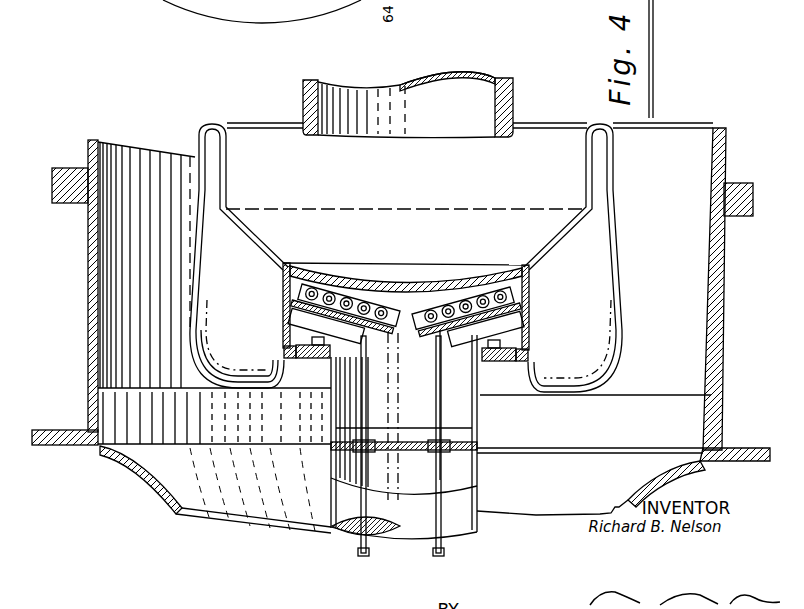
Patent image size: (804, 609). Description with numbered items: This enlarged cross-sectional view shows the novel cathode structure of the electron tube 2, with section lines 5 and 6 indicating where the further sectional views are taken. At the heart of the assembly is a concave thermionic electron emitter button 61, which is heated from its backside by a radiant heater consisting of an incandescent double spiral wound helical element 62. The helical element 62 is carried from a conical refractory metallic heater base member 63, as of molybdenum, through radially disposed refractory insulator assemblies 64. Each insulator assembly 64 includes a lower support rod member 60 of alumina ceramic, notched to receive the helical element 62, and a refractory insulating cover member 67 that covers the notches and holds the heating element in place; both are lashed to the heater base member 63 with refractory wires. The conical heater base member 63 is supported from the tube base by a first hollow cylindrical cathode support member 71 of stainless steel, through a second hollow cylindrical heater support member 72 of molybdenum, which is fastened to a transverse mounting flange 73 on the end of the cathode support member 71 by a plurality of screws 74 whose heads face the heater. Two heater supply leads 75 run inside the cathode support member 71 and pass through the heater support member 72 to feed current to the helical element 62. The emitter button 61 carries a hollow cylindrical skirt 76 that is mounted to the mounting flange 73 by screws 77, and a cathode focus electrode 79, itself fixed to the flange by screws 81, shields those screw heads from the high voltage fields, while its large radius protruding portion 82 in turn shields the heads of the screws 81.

The electron tube 2 is at (166, 113).
The section line 5- 5 is at (243, 243).
The section line 6- 6 is at (432, 246).
The lower support rod member 60 is at (431, 346).
The thermionic electron emitter button 61 is at (476, 292).
The helical element 62 is at (407, 316).
The heater base member 63 is at (407, 338).
The insulator assembly 64 is at (246, 249).
The insulating cover member 67 is at (382, 304).
The cathode support member 71 is at (473, 393).
The heater support member 72 is at (476, 340).
The mounting flange 73 is at (306, 358).
The screws 74 is at (323, 359).
The heater supply leads 75 is at (364, 556).
The hollow cylindrical skirt 76 is at (531, 284).
The screws 77 is at (281, 345).
The cathode focus electrode 79 is at (621, 231).
The screws 81 is at (288, 359).
The large radius protruding portion 82 is at (212, 356).